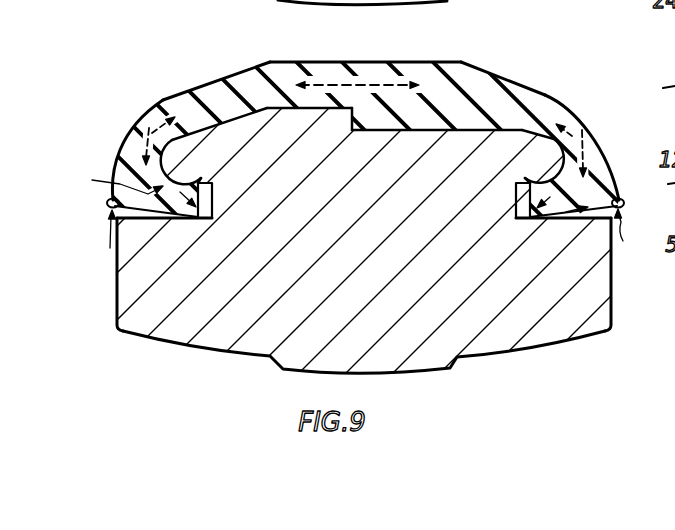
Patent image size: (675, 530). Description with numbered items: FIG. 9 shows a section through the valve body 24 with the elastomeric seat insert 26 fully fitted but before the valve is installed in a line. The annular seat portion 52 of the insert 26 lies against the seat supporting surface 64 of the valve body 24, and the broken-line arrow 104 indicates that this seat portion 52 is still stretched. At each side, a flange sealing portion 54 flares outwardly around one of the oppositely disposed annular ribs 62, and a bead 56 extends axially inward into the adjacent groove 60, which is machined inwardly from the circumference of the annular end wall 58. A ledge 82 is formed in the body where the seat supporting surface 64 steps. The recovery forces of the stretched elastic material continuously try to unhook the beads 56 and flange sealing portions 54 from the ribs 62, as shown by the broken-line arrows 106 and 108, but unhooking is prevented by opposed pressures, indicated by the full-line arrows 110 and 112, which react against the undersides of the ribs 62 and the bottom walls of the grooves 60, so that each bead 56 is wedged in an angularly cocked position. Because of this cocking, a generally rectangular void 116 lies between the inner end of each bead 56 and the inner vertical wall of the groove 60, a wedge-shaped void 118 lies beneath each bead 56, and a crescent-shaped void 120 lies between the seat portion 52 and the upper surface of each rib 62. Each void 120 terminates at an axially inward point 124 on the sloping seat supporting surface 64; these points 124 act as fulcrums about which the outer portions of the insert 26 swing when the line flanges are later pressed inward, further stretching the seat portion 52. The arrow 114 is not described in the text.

The valve body 24 is at (236, 319).
The elastomeric seat insert 26 is at (475, 87).
The annular seat portion 52 is at (276, 63).
The flange sealing portions 54 is at (118, 162).
The beads 56 is at (192, 185).
The annular end walls 58 is at (116, 310).
The axially extending grooves 60 is at (211, 218).
The annular ribs 62 is at (565, 160).
The seat supporting surface 64 is at (304, 108).
The ledge 82 is at (352, 129).
The broken-line arrow 104 is at (350, 84).
The broken-line arrow 106 is at (150, 138).
The broken-line arrow 108 is at (586, 130).
The full-line arrow 110 is at (572, 234).
The full-line arrow 112 is at (188, 209).
The arrow indicating upward force on lip 114 is at (109, 248).
The void 116 is at (214, 190).
The void 118 is at (107, 203).
The void 120 is at (186, 138).
The termination points 124 is at (190, 130).